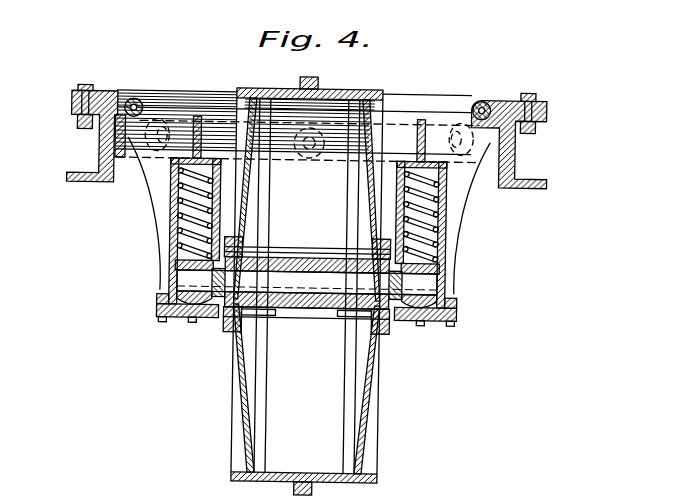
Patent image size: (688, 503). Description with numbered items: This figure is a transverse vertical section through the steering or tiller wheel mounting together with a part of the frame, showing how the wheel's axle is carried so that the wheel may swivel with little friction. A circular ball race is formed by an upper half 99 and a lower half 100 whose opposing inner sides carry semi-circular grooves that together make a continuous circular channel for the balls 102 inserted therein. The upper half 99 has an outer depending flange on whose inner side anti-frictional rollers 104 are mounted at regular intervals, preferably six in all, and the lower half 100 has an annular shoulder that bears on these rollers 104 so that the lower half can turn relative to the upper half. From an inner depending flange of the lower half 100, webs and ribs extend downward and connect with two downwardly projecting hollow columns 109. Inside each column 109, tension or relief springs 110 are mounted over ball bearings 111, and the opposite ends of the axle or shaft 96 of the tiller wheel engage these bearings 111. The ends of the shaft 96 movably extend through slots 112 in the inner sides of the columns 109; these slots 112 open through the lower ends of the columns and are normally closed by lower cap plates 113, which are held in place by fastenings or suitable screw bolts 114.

The axle or shaft 96 is at (342, 296).
The upper half of the ball race 99 is at (214, 103).
The lower half of the ball race 100 is at (129, 152).
The balls 102 is at (132, 101).
The anti-frictional rollers 104 is at (160, 120).
The hollow columns 109 is at (466, 214).
The tension or relief springs 110 is at (448, 241).
The ball bearings 111 is at (445, 273).
The slots 112 is at (245, 240).
The lower cap plates 113 is at (182, 324).
The screw bolts 114 is at (162, 320).